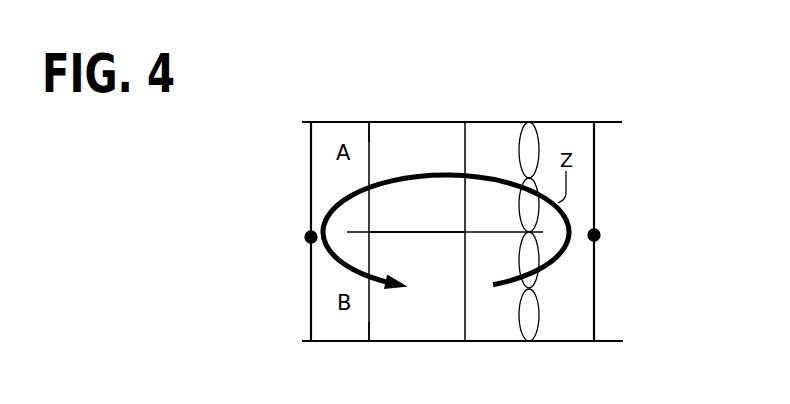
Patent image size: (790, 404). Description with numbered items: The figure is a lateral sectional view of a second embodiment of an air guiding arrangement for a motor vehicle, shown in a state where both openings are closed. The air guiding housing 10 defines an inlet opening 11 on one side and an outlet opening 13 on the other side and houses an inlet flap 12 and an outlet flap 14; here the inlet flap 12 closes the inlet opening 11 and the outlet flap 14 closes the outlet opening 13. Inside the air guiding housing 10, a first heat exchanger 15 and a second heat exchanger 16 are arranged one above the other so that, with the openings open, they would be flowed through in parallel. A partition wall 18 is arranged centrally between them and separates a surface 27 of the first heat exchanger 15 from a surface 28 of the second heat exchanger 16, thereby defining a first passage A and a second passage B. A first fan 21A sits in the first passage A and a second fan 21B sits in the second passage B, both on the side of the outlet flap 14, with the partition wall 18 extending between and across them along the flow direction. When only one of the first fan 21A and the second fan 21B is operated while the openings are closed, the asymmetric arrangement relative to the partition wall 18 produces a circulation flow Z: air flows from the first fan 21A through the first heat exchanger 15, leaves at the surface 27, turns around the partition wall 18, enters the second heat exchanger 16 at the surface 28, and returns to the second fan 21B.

The air guiding housing 10 is at (628, 101).
The inlet opening 11 is at (320, 187).
The inlet flap 12 is at (311, 267).
The outlet opening 13 is at (592, 184).
The outlet flap 14 is at (594, 270).
The first heat exchanger 15 is at (432, 147).
The second heat exchanger 16 is at (418, 312).
The partition wall 18 is at (482, 232).
The first fan 21A is at (532, 138).
The second fan 21B is at (532, 322).
The surface of the first heat exchanger 27 is at (369, 142).
The surface of the second heat exchanger 28 is at (369, 322).